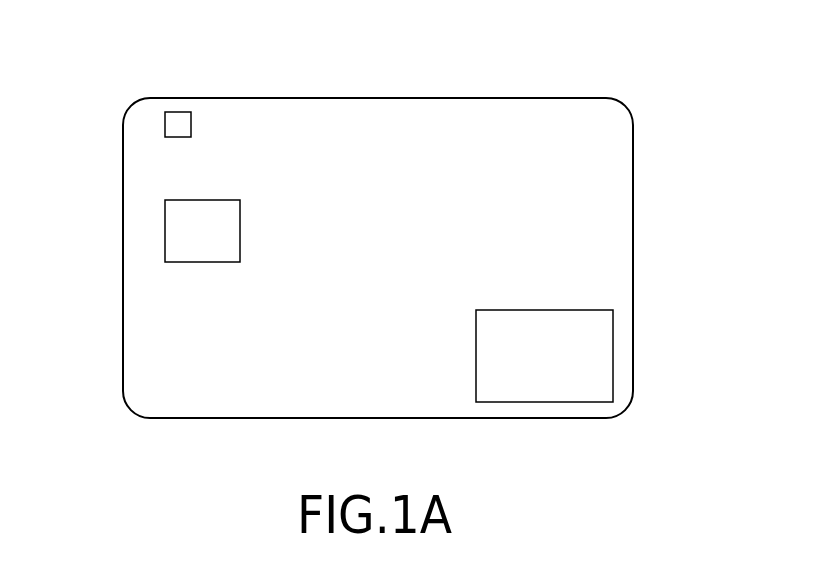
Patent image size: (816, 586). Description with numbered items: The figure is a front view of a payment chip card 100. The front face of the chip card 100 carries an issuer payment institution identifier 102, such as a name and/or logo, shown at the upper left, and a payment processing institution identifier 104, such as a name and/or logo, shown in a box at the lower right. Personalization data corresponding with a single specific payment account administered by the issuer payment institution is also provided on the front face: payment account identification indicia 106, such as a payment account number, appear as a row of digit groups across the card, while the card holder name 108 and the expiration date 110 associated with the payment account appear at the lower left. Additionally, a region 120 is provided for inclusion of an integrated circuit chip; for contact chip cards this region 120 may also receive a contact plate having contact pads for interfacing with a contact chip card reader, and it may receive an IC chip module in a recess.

The payment chip card 100 is at (567, 73).
The issuer payment institution identifier 102 is at (140, 118).
The payment processing institution identifier 104 is at (626, 359).
The payment account identification indicia 106 is at (153, 286).
The card holder name 108 is at (153, 369).
The expiration date 110 is at (153, 341).
The region 120 is at (151, 221).